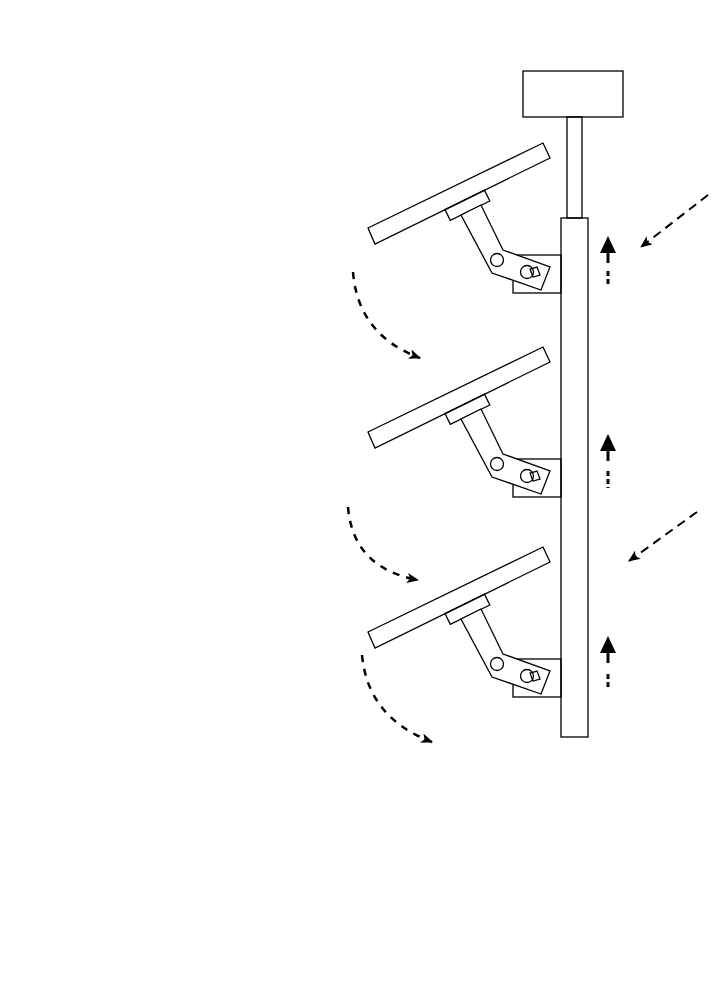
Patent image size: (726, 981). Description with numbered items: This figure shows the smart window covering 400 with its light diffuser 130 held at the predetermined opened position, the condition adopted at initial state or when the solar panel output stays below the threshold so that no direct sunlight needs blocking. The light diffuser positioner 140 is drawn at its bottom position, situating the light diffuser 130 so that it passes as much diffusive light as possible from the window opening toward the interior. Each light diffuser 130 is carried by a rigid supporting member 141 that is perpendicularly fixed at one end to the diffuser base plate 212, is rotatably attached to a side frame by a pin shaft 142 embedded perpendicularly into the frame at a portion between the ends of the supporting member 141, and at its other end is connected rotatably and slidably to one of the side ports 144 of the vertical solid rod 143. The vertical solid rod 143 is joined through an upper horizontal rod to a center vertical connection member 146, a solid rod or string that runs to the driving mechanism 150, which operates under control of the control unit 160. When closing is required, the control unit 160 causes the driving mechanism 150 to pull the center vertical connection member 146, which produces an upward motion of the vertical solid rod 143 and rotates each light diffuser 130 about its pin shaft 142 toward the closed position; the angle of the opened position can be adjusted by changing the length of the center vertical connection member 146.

The solar tracking system 400 is at (150, 95).
The light diffuser 130 is at (365, 238).
The supporting member 141 is at (467, 249).
The pin shaft 142 is at (492, 273).
The side port 144 is at (475, 377).
The vertical solid rod 143 is at (581, 397).
The light diffuser positioner 140 is at (635, 466).
The center vertical connection member 146 is at (590, 174).
The driving mechanism 150 is at (620, 79).
The control unit 160 is at (627, 93).
The panel edge 212 is at (448, 425).